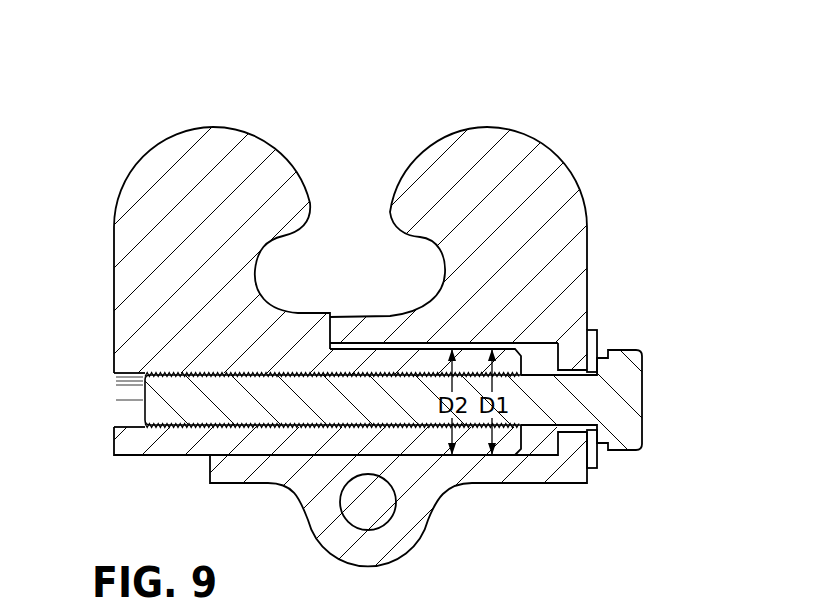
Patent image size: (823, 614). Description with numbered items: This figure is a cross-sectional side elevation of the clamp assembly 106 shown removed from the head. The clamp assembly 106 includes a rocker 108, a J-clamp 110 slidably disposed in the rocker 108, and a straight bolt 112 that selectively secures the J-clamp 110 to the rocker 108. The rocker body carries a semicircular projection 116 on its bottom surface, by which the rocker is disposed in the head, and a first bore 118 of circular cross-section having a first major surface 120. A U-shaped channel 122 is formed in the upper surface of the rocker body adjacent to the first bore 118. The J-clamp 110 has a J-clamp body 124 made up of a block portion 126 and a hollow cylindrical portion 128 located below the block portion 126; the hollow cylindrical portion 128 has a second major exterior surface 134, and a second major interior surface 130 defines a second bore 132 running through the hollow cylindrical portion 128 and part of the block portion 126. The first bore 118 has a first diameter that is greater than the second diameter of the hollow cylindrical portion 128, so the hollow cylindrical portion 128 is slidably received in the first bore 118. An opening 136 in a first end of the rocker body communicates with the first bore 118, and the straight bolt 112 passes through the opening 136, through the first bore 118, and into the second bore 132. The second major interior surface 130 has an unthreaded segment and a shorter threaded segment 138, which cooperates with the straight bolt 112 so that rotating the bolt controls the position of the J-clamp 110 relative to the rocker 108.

The clamp assembly 106 is at (359, 81).
The rocker 108 is at (516, 85).
The J-clamp 110 is at (214, 111).
The straight bolt 112 is at (644, 368).
The projection 116 is at (403, 535).
The first bore 118 is at (557, 343).
The first major surface 120 is at (545, 447).
The channel 122 is at (208, 460).
The J-clamp body 124 is at (130, 172).
The block portion 126 is at (278, 322).
The hollow cylindrical portion 128 is at (114, 443).
The second major interior surface 130 is at (125, 397).
The second bore 132 is at (90, 419).
The second major exterior surface 134 is at (377, 350).
The opening 136 is at (585, 362).
The threaded segment 138 is at (297, 427).